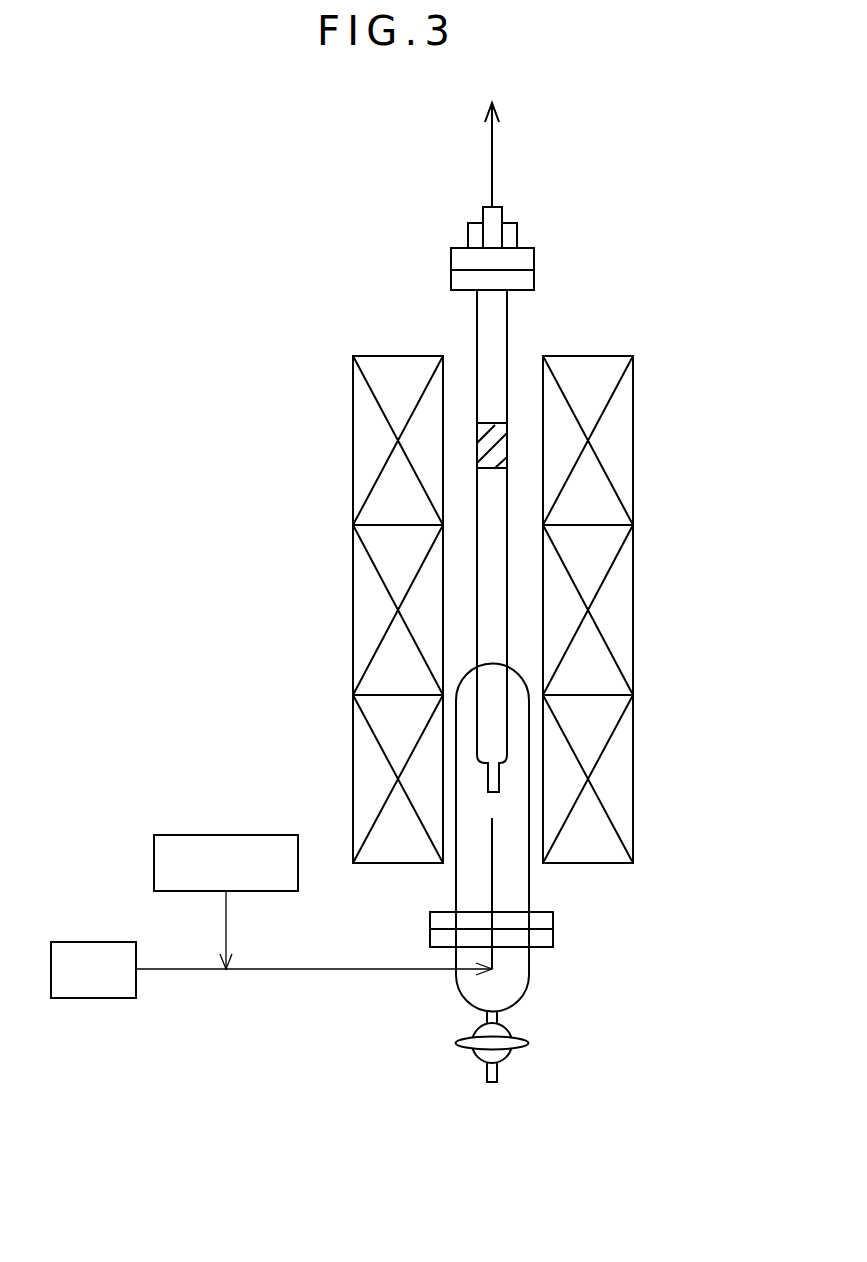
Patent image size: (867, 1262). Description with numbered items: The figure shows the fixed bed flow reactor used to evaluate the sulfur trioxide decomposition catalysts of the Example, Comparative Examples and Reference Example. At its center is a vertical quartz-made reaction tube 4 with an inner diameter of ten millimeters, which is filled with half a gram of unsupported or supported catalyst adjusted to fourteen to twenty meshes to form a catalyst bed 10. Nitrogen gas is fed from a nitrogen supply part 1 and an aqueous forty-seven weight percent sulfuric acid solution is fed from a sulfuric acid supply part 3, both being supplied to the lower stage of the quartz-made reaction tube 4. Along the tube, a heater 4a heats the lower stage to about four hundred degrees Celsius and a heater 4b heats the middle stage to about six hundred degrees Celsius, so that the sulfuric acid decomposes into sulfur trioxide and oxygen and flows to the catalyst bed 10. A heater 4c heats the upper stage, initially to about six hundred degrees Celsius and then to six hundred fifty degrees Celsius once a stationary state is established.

The nitrogen supply part 1 is at (95, 998).
The sulfuric acid supply part 3 is at (260, 835).
The quartz-made reaction tube 4 is at (521, 526).
The heater 4a is at (617, 783).
The heater 4b is at (617, 613).
The heater 4c is at (617, 446).
The catalyst bed 10 is at (507, 447).